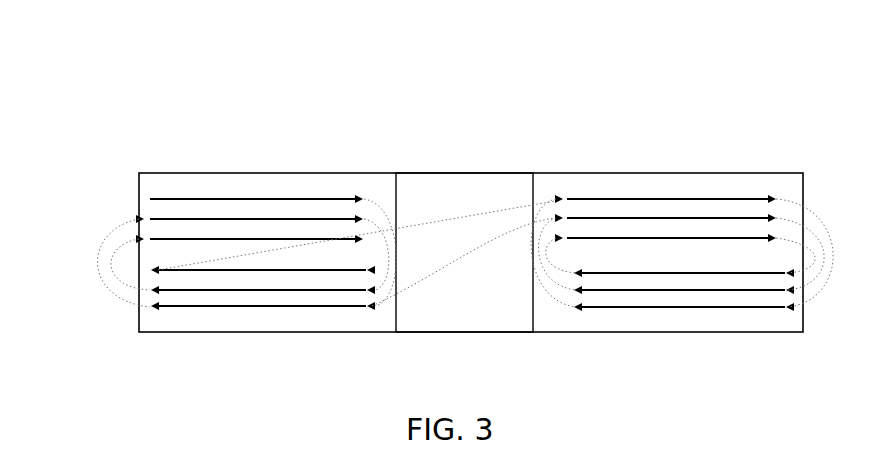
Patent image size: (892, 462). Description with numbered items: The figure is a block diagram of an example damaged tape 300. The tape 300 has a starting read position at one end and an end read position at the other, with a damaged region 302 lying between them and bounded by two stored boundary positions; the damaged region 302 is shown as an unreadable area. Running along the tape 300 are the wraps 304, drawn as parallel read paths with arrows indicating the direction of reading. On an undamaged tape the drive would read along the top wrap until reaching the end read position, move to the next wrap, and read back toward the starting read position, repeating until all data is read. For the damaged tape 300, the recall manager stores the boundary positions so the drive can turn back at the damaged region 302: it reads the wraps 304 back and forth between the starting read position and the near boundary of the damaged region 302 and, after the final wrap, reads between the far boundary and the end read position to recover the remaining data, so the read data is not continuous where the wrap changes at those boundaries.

The damaged tape 300 is at (199, 88).
The damaged region 302 is at (466, 158).
The wraps 304 is at (707, 197).